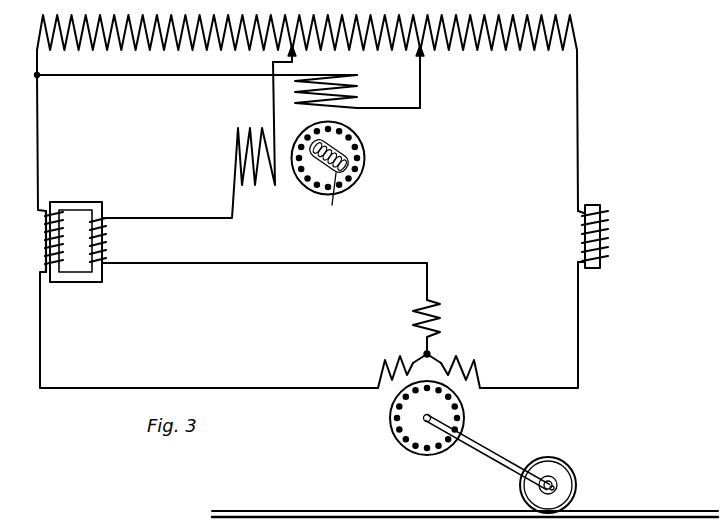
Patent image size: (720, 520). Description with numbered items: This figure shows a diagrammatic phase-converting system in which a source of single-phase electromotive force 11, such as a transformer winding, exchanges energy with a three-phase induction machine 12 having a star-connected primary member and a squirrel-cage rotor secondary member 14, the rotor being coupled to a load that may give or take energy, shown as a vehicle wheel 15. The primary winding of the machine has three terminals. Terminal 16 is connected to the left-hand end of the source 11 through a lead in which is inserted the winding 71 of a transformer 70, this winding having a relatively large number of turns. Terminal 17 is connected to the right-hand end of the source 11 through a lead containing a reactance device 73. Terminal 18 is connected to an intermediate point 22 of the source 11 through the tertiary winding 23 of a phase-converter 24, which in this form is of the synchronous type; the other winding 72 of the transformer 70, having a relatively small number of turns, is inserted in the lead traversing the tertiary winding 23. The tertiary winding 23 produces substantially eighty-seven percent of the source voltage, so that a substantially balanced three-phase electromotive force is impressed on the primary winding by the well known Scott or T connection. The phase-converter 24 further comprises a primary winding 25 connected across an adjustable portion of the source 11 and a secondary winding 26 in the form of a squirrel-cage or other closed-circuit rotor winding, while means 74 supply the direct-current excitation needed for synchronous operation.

The source of single-phase electromotive force 11 is at (581, 27).
The intermediate point 22 is at (295, 57).
The primary winding 25 is at (358, 100).
The tertiary winding 23 is at (188, 140).
The phase-converter 24 is at (349, 172).
The secondary winding 26 is at (364, 151).
The direct-current excitation means 74 is at (329, 179).
The transformer 70 is at (87, 257).
The winding 71 is at (45, 245).
The winding 72 is at (114, 240).
The reactance device 73 is at (607, 236).
The terminal 18 is at (428, 287).
The terminal 16 is at (379, 381).
The terminal 17 is at (481, 379).
The three-phase induction machine 12 is at (453, 435).
The squirrel-cage rotor secondary member 14 is at (450, 408).
The vehicle wheel 15 is at (567, 483).